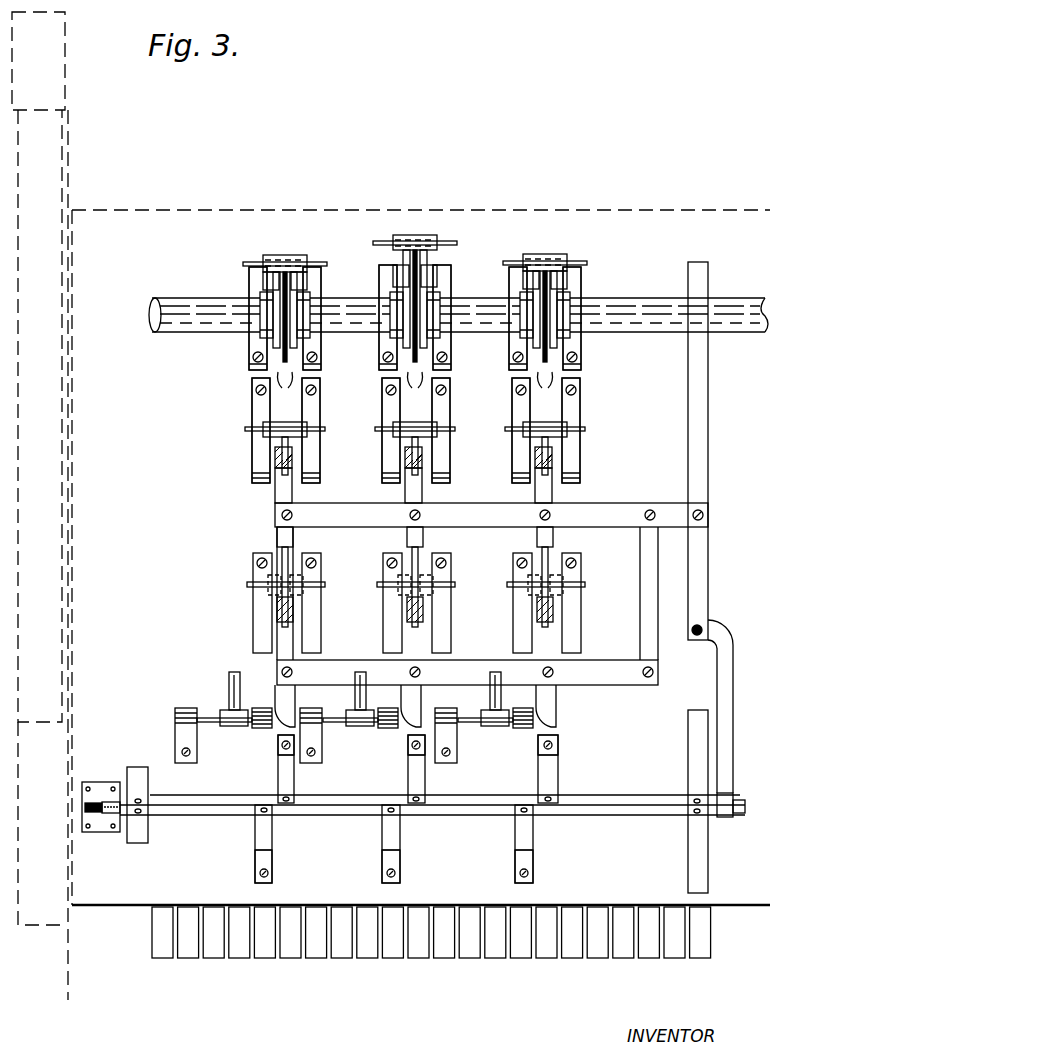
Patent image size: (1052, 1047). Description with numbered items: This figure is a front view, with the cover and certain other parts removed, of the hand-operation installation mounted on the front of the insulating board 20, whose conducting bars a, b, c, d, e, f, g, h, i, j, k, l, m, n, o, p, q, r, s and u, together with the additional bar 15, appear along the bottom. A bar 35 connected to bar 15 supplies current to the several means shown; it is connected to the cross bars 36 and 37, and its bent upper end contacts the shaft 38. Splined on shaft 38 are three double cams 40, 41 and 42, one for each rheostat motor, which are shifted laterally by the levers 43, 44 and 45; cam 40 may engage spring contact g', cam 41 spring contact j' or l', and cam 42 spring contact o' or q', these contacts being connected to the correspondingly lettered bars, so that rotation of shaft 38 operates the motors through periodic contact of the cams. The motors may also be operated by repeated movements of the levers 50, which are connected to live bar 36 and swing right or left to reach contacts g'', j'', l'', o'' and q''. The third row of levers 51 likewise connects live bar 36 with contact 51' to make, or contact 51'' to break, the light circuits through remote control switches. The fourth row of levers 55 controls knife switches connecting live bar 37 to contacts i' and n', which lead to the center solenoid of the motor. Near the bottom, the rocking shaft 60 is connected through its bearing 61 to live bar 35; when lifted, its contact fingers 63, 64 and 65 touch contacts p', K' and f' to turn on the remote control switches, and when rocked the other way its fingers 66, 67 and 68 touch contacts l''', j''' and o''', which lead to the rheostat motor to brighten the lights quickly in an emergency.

The shaft 38 is at (652, 296).
The lever 45 is at (296, 276).
The lever 44 is at (433, 264).
The lever 43 is at (558, 280).
The double cam 42 is at (286, 440).
The double cam 41 is at (416, 440).
The double cam 40 is at (546, 439).
The lever 50 is at (415, 429).
The cross bar 36 is at (606, 503).
The cross bar 37 is at (600, 660).
The bar 35 is at (708, 597).
The lever 51 is at (426, 577).
The contact 51' is at (454, 603).
The contact 51'' is at (392, 603).
The lever 55 is at (494, 726).
The contact finger 65 is at (279, 778).
The contact finger 64 is at (408, 780).
The contact finger 63 is at (553, 782).
The rocking shaft 60 is at (618, 795).
The bearing 61 is at (738, 810).
The finger 68 is at (273, 838).
The finger 67 is at (400, 838).
The finger 66 is at (533, 838).
The bar 15 is at (702, 958).
The insulating board 20 is at (97, 557).
The contact n' is at (311, 747).
The contact i' is at (446, 747).
The contact f' is at (275, 746).
The contact K' is at (400, 750).
The contact p' is at (562, 744).
The contact o''' is at (280, 866).
The contact j''' is at (403, 866).
The contact l''' is at (540, 866).
The spring contact q' is at (239, 309).
The spring contact o' is at (323, 309).
The spring contact l' is at (480, 312).
The spring contact j' is at (451, 310).
The spring contact g' is at (514, 299).
The contact q'' is at (250, 430).
The contact o'' is at (322, 430).
The contact l'' is at (481, 430).
The contact j'' is at (451, 430).
The contact g'' is at (513, 430).
The conducting bar a is at (672, 958).
The conducting bar b is at (646, 958).
The conducting bar c is at (621, 958).
The conducting bar d is at (595, 958).
The conducting bar e is at (570, 958).
The conducting bar f is at (526, 970).
The conducting bar g is at (502, 970).
The conducting bar h is at (493, 958).
The conducting bar i is at (452, 970).
The conducting bar j is at (424, 970).
The conducting bar k is at (416, 958).
The conducting bar l is at (372, 970).
The conducting bar m is at (365, 958).
The conducting bar n is at (319, 970).
The conducting bar o is at (294, 970).
The conducting bar p is at (269, 970).
The conducting bar q is at (243, 970).
The conducting bar r is at (237, 958).
The conducting bar s is at (211, 958).
The conducting bar u is at (160, 958).